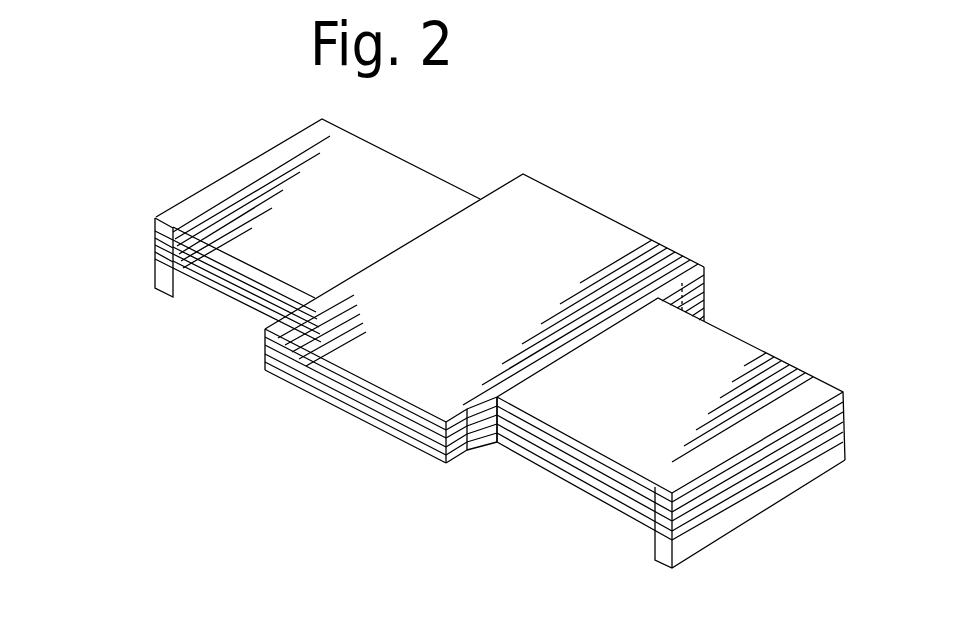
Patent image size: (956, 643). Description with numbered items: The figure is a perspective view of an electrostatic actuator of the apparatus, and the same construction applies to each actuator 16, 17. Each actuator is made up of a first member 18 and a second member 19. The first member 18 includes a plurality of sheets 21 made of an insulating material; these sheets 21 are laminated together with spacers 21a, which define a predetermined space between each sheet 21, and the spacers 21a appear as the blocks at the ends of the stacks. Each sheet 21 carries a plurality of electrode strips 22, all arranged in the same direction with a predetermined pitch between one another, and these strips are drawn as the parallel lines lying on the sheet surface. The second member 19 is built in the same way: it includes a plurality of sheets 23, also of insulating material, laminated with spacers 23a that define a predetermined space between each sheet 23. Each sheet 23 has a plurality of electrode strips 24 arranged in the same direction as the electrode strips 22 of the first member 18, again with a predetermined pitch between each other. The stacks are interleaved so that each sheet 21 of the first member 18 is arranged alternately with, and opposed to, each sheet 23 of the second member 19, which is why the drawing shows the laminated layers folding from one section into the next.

The actuator 16 is at (602, 142).
The actuator 17 is at (484, 307).
The first member 18 is at (676, 423).
The second member 19 is at (662, 252).
The sheet 21 is at (597, 498).
The spacer 21a is at (156, 259).
The electrode strip 22 is at (773, 350).
The sheet 23 is at (497, 441).
The spacer 23a is at (337, 430).
The electrode strip 24 is at (630, 217).